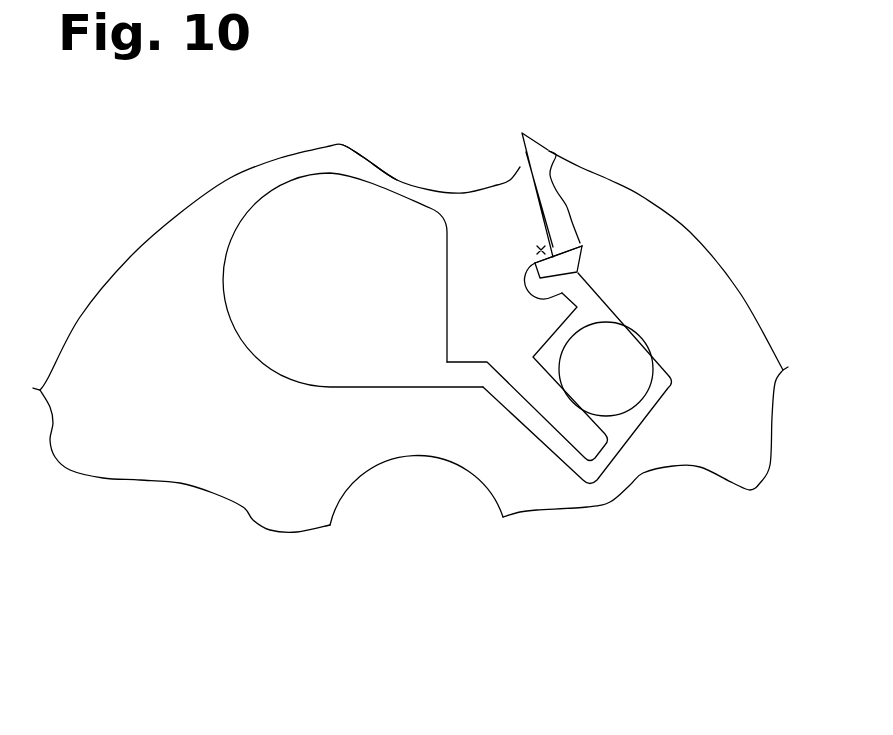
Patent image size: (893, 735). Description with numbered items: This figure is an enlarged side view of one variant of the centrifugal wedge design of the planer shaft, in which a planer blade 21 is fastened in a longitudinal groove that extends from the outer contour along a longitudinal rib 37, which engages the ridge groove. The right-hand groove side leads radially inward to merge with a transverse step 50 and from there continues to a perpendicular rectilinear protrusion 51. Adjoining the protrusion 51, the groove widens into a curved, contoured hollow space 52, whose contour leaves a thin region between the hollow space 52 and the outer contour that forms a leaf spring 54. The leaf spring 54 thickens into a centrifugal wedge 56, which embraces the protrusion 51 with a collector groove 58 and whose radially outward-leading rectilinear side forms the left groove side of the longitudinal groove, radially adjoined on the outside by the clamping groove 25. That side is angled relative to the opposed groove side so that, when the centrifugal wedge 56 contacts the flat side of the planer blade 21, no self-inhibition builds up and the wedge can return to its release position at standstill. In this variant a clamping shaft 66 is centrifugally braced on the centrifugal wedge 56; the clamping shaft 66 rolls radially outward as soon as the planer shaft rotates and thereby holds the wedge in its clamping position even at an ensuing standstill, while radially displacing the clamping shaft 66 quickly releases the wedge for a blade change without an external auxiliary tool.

The planer blade 21 is at (548, 150).
The clamping groove 25 is at (437, 177).
The longitudinal rib 37 is at (556, 192).
The transverse step 50 is at (545, 250).
The rectilinear protrusion 51 is at (562, 268).
The hollow space 52 is at (380, 312).
The leaf spring 54 is at (383, 171).
The centrifugal wedge 56 is at (511, 310).
The collector groove 58 is at (522, 252).
The clamping shaft 66 is at (600, 378).